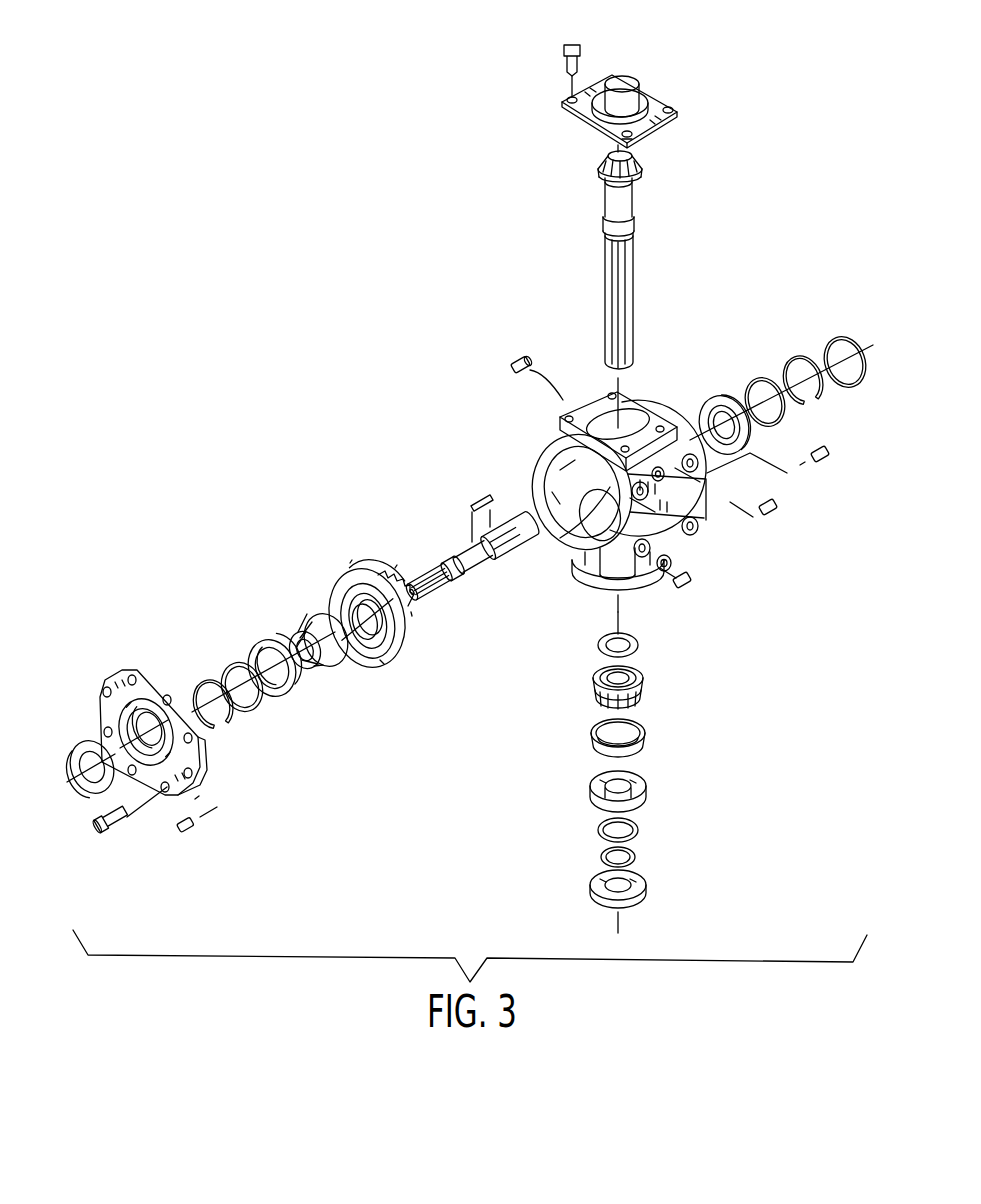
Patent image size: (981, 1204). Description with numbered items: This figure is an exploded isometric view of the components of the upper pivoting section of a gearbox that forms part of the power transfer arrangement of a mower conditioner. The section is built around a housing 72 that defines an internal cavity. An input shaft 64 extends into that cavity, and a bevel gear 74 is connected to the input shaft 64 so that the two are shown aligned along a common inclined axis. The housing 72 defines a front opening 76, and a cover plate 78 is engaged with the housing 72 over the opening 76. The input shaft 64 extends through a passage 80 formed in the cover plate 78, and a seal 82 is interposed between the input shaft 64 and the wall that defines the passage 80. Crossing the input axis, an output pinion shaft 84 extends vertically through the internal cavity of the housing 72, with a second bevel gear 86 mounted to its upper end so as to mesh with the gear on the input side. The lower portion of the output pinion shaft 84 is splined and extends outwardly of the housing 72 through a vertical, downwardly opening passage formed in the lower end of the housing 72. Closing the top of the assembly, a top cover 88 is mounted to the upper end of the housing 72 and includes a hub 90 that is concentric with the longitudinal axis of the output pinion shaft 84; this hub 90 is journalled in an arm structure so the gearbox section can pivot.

The input shaft 64 is at (477, 575).
The housing 72 is at (538, 465).
The bevel gear 74 is at (403, 660).
The front opening 76 is at (556, 492).
The cover plate 78 is at (176, 721).
The passage 80 is at (145, 728).
The seal 82 is at (75, 740).
The output pinion shaft 84 is at (602, 208).
The bevel gear 86 is at (642, 158).
The top cover 88 is at (592, 128).
The hub 90 is at (630, 82).